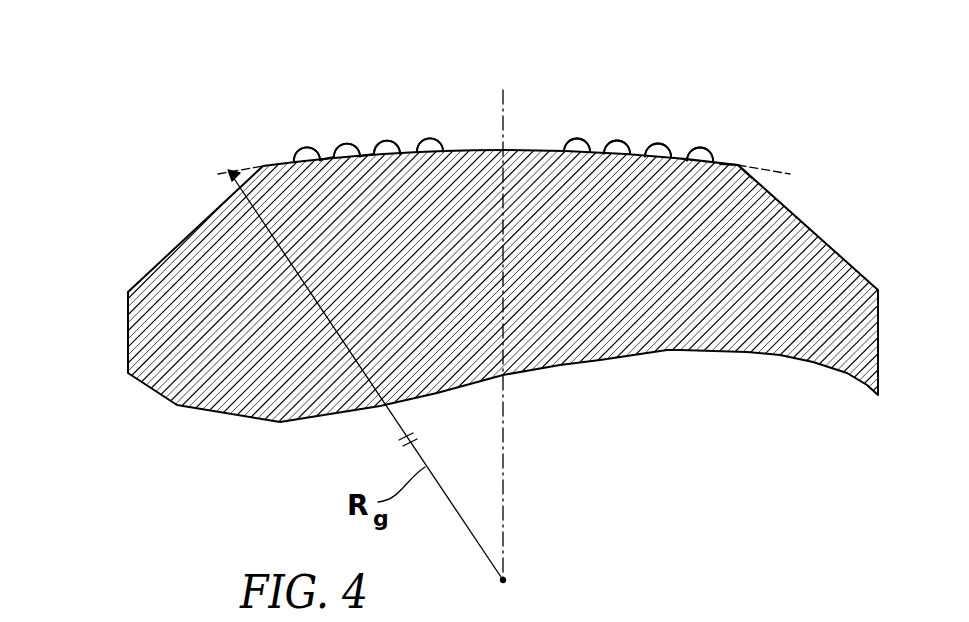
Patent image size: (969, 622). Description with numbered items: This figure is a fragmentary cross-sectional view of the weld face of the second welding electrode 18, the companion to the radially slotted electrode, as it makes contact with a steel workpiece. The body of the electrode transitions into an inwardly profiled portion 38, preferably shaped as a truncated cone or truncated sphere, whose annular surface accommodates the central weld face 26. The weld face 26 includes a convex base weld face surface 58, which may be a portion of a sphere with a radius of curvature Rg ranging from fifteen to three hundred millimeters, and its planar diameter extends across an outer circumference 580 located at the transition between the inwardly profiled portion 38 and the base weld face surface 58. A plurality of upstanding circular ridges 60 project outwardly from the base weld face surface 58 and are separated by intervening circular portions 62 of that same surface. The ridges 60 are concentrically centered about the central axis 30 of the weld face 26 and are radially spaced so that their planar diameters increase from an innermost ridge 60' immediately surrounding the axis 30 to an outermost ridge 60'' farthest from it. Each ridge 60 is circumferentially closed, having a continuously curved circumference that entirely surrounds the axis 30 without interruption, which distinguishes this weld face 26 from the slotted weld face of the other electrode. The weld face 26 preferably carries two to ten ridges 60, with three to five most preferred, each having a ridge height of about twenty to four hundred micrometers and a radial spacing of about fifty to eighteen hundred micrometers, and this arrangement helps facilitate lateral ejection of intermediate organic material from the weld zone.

The second welding electrode 18 is at (117, 310).
The second weld face 26 is at (335, 100).
The central axis 30 is at (505, 397).
The inwardly profiled portion 38 is at (200, 225).
The convex base weld face surface 58 is at (727, 160).
The outer circumference 580 is at (740, 165).
The upstanding circular ridges 60 is at (639, 111).
The innermost ridge 60' is at (413, 104).
The outermost ridge 60'' is at (274, 118).
The intervening circular portions 62 is at (367, 153).